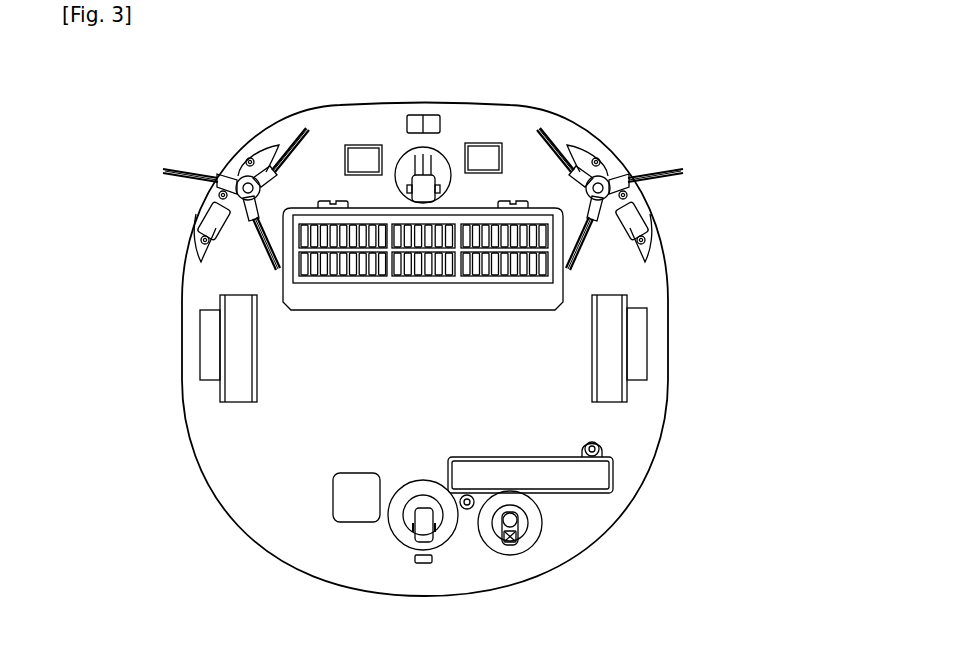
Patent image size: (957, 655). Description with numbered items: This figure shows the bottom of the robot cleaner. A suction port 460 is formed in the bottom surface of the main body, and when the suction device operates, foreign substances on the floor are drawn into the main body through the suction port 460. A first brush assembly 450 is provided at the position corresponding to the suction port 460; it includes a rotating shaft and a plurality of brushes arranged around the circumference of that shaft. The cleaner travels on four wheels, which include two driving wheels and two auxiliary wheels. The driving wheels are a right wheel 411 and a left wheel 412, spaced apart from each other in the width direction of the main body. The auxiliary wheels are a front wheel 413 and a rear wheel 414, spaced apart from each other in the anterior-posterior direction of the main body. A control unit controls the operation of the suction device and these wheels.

The right wheel 411 is at (240, 345).
The left wheel 412 is at (608, 343).
The front wheel 413 is at (428, 186).
The rear wheel 414 is at (422, 528).
The first brush assembly 450 is at (350, 234).
The suction port 460 is at (518, 235).